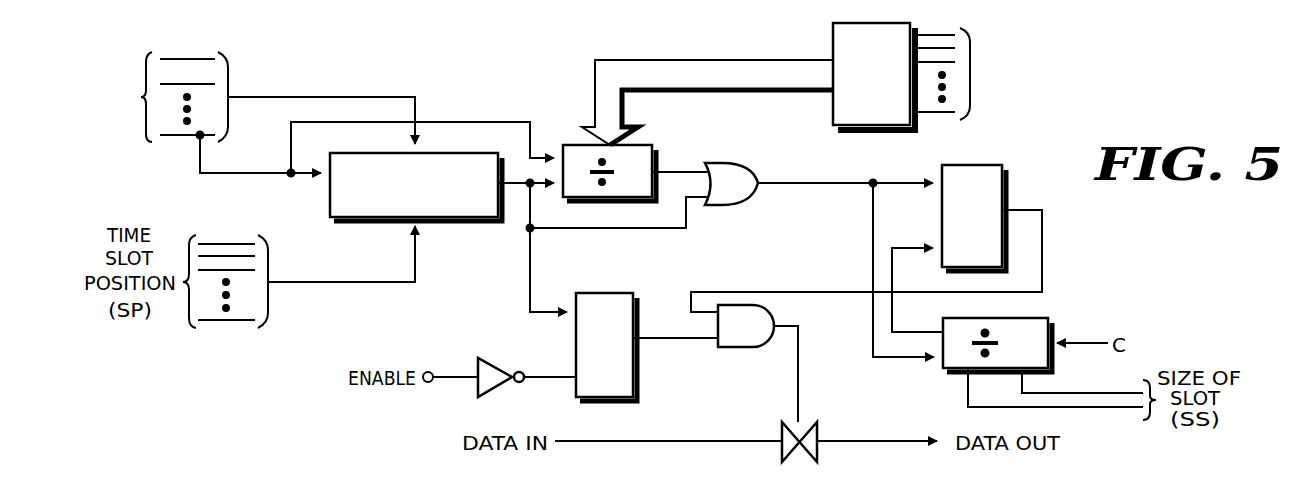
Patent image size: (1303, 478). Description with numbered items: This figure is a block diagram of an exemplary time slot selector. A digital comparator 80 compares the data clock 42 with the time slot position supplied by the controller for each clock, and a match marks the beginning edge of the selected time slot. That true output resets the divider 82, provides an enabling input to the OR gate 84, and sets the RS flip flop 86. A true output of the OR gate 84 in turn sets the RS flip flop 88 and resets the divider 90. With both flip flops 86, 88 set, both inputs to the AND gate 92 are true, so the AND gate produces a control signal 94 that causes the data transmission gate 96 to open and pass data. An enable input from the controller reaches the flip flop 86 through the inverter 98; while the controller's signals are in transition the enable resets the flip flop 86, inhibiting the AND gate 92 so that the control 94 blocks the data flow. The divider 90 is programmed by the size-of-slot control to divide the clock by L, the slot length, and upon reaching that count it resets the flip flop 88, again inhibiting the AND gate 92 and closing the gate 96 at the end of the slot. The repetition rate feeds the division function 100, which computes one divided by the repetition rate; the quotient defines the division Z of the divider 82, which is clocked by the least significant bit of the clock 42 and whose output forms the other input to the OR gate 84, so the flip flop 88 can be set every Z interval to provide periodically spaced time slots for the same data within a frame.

The data clock 42 is at (146, 122).
The digital 2^(n+1) comparator 80 is at (472, 222).
The divider 82 is at (654, 146).
The OR gate 84 is at (733, 207).
The RS flip flop 86 is at (599, 292).
The RS flip flop 88 is at (973, 164).
The divider 90 is at (941, 369).
The AND gate 92 is at (735, 348).
The control signal 94 is at (798, 368).
The data transmission gate 96 is at (810, 422).
The inverter 98 is at (490, 364).
The division function 100 is at (871, 131).